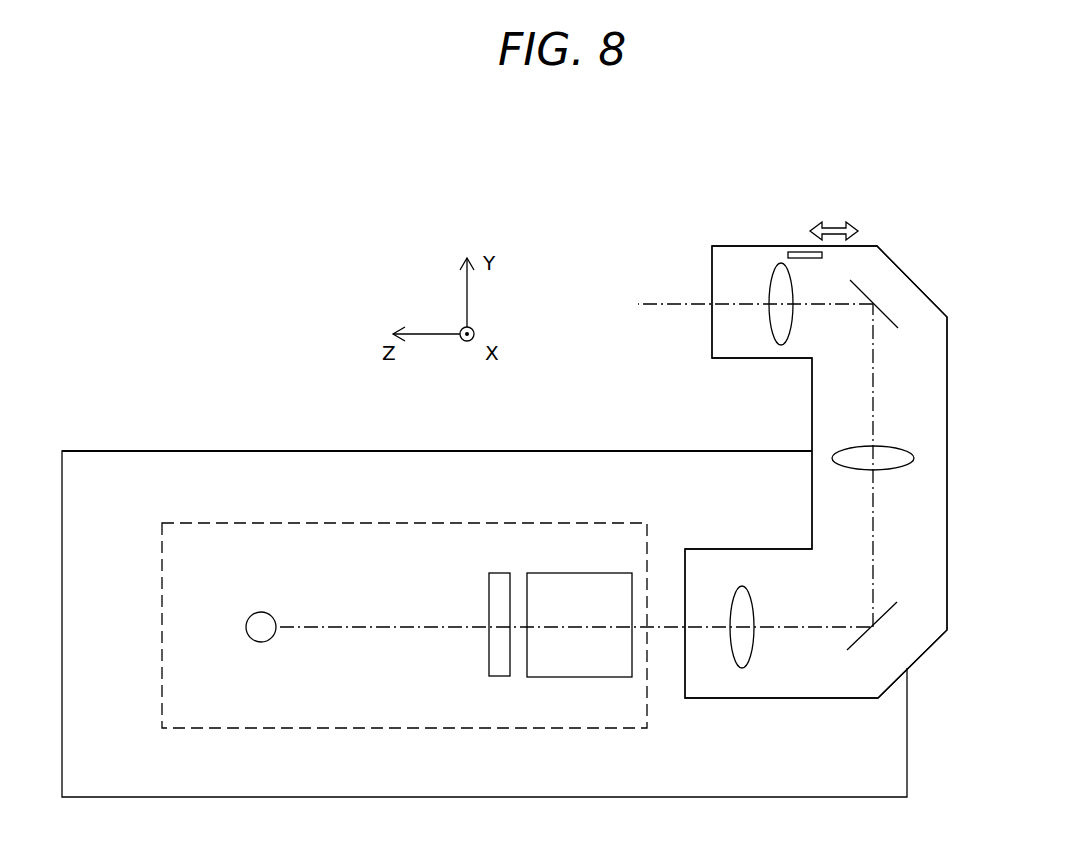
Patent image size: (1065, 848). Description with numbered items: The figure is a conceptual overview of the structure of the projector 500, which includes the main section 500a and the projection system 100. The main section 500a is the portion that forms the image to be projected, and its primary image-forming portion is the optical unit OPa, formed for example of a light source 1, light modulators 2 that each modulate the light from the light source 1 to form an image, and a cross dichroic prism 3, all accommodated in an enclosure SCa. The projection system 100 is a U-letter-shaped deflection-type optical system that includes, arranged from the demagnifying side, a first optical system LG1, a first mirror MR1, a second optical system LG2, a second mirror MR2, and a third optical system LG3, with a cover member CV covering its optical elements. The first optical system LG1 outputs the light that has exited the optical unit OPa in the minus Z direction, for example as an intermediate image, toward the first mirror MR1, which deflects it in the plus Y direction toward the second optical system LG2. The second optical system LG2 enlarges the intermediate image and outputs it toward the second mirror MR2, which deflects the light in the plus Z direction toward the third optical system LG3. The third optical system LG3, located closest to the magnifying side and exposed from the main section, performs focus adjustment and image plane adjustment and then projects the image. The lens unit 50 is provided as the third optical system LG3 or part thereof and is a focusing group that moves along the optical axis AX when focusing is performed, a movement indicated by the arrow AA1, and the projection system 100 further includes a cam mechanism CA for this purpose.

The projector 500 is at (583, 188).
The main section 500a is at (278, 478).
The enclosure SCa is at (422, 458).
The projection system 100 is at (883, 262).
The cover member CV is at (933, 377).
The optical axis AX is at (665, 300).
The optical unit OPa is at (325, 533).
The light source 1 is at (264, 633).
The light modulators 2 is at (498, 668).
The cross dichroic prism 3 is at (572, 668).
The first optical system LG1 is at (743, 650).
The first mirror MR1 is at (865, 635).
The second optical system LG2 is at (898, 458).
The second mirror MR2 is at (868, 297).
The third optical system LG3 is at (777, 287).
The lens unit 50 is at (718, 254).
The cam mechanism CA is at (795, 250).
The movement direction of lens group AA1 is at (830, 223).